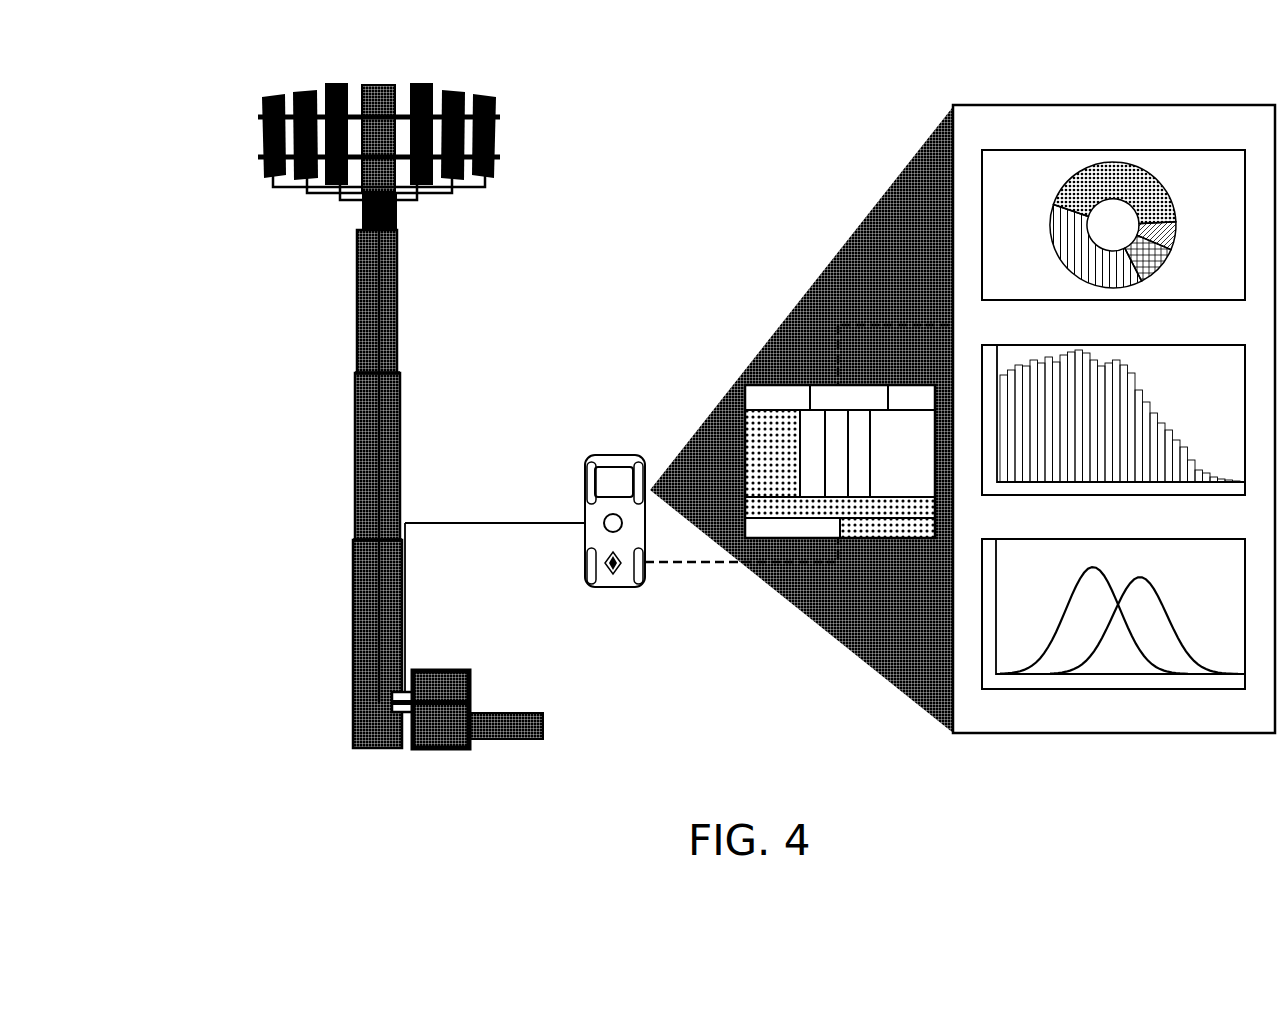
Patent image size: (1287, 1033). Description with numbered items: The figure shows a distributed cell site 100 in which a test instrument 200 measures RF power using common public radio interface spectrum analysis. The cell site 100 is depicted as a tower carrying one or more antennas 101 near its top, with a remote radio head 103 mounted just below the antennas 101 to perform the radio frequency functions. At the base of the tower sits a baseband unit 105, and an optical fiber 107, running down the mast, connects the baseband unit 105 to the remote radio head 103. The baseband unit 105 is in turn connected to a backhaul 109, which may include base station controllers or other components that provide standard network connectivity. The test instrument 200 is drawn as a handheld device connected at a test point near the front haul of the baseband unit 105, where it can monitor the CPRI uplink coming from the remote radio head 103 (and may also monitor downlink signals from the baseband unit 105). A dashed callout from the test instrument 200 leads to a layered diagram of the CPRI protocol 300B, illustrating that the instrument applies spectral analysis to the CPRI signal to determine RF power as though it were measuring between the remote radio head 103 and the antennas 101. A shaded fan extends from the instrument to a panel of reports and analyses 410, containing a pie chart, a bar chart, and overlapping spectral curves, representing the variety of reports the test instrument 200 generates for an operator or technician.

The distributed cell site 100 is at (284, 494).
The antennas 101 is at (265, 167).
The remote radio head (RRH) 103 is at (398, 218).
The baseband unit (BBU) 105 is at (466, 670).
The optical fiber 107 is at (398, 463).
The backhaul 109 is at (541, 713).
The test instrument 200 is at (615, 455).
The CPRI protocol 300B is at (757, 385).
The reports and analyses 410 is at (988, 122).